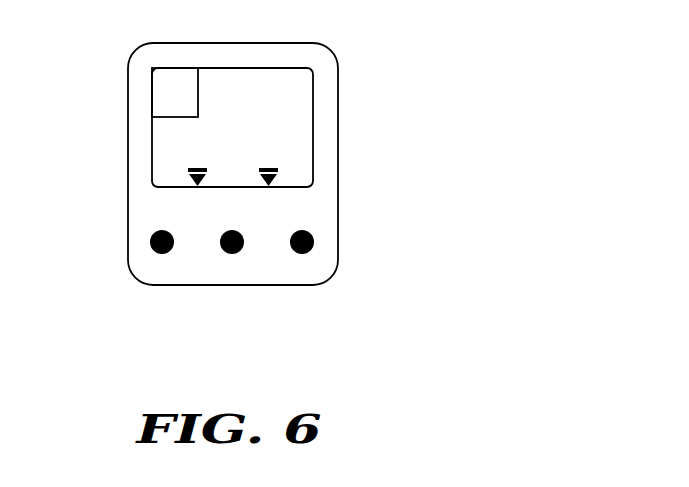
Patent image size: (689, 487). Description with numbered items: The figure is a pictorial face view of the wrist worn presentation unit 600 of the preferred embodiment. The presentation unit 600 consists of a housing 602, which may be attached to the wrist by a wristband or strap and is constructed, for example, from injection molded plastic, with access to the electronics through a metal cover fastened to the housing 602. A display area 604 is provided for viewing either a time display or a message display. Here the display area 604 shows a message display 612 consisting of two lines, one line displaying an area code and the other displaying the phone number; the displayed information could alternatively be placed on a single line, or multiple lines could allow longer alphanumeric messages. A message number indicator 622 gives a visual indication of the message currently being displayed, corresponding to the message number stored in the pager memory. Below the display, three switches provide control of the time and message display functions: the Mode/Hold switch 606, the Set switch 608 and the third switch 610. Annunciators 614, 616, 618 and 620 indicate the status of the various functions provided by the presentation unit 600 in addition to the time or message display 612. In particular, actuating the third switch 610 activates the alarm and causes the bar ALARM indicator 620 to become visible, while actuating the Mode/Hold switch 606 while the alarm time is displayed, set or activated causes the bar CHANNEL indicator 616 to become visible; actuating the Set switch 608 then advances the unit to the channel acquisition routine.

The wrist worn presentation unit 600 is at (232, 202).
The housing 602 is at (128, 80).
The display area 604 is at (312, 87).
The Mode/Hold switch 606 is at (150, 245).
The Set switch 608 is at (242, 250).
The switch S3 610 is at (343, 228).
The message display 612 is at (286, 117).
The annunciator 614 is at (190, 183).
The bar CHANNEL indicator 616 is at (188, 170).
The annunciator 618 is at (279, 183).
The bar ALARM indicator 620 is at (278, 169).
The message number indicator 622 is at (172, 80).